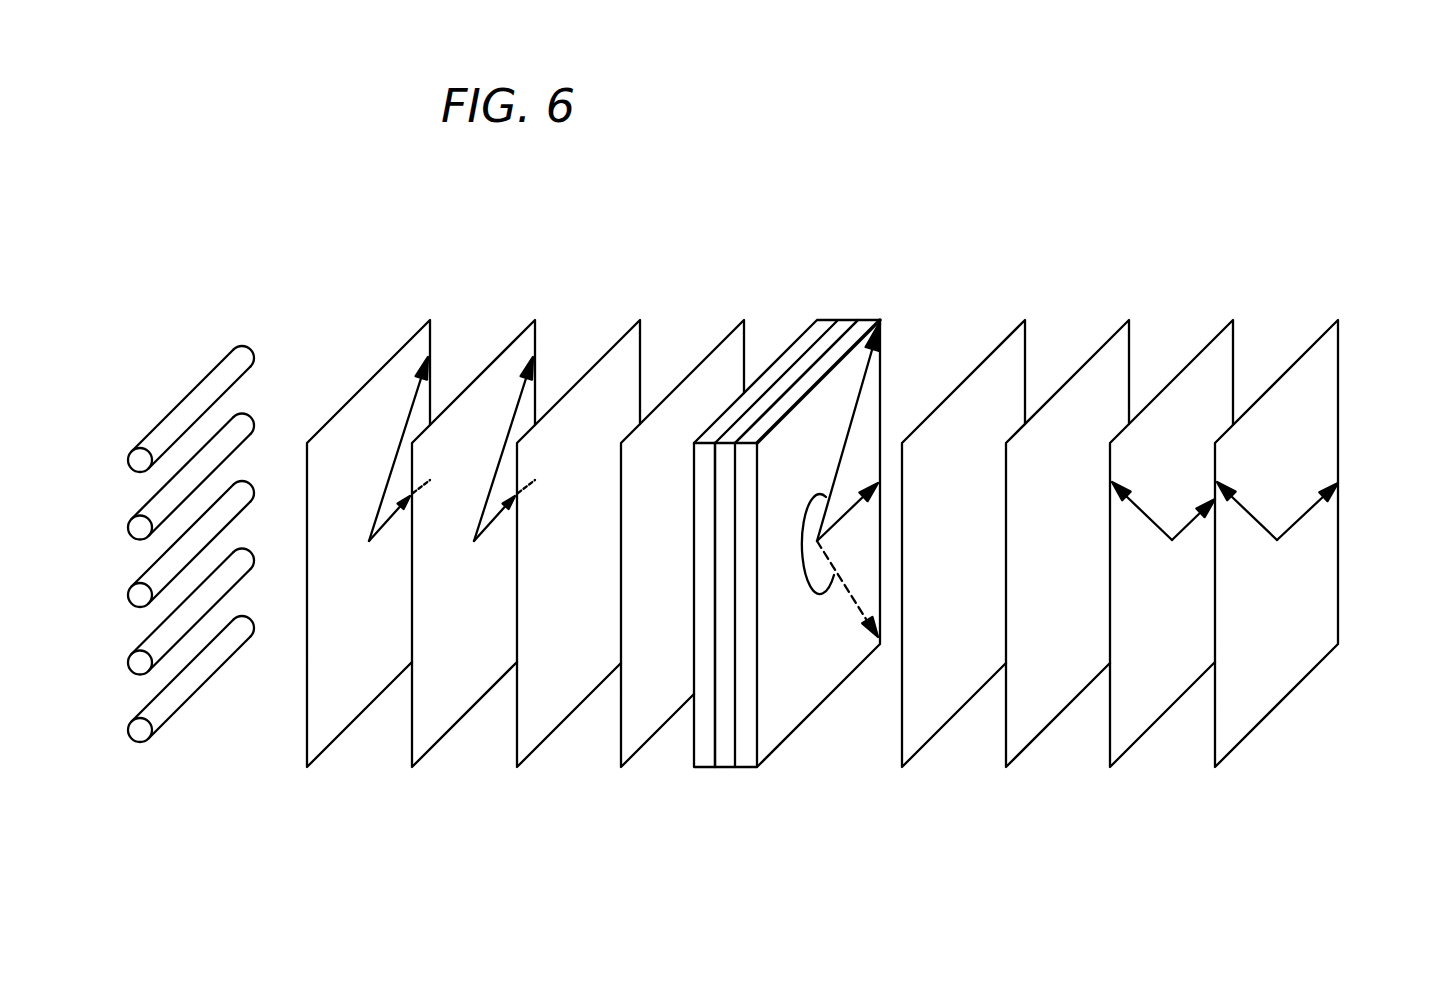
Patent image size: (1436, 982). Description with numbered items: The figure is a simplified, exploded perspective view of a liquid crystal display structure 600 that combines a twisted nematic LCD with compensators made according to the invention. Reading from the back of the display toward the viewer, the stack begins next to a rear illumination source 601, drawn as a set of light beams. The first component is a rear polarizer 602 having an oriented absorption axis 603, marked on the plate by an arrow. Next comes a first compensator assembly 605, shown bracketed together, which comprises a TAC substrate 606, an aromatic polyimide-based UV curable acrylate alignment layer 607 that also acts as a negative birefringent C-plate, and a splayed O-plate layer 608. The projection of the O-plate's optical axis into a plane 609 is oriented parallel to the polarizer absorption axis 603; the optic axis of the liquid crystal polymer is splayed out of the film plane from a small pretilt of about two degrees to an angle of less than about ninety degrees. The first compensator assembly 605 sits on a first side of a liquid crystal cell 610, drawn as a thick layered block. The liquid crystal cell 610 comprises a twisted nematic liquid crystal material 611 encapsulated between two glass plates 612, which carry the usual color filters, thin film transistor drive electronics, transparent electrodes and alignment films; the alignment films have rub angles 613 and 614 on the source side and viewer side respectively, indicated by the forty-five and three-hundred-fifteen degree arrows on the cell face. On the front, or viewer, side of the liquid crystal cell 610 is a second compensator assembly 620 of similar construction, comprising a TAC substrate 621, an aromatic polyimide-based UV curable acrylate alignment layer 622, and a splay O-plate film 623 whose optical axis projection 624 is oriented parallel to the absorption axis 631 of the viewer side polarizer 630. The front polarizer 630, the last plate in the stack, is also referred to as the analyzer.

The liquid crystal display structure 600 is at (1238, 140).
The rear illumination source 601 is at (184, 395).
The rear polarizer 602 is at (306, 727).
The absorption axis 603 is at (418, 386).
The first compensator assembly 605 is at (403, 773).
The TAC substrate 606 is at (722, 377).
The alignment layer 607 is at (557, 672).
The splayed O-plate layer 608 is at (438, 680).
The projection of optical axis into a plane 609 is at (523, 386).
The liquid crystal cell 610 is at (888, 310).
The twisted nematic liquid crystal material 611 is at (808, 362).
The glass plates 612 is at (700, 768).
The rub angle 613 is at (852, 595).
The rub angle 614 is at (865, 392).
The second compensator assembly 620 is at (1118, 777).
The TAC substrate 621 is at (1025, 350).
The alignment layer 622 is at (1129, 350).
The splay O-plate film 623 is at (1233, 350).
The optical axis projection 624 is at (1153, 527).
The front polarizer 630 is at (1338, 350).
The absorption axis 631 is at (1257, 527).